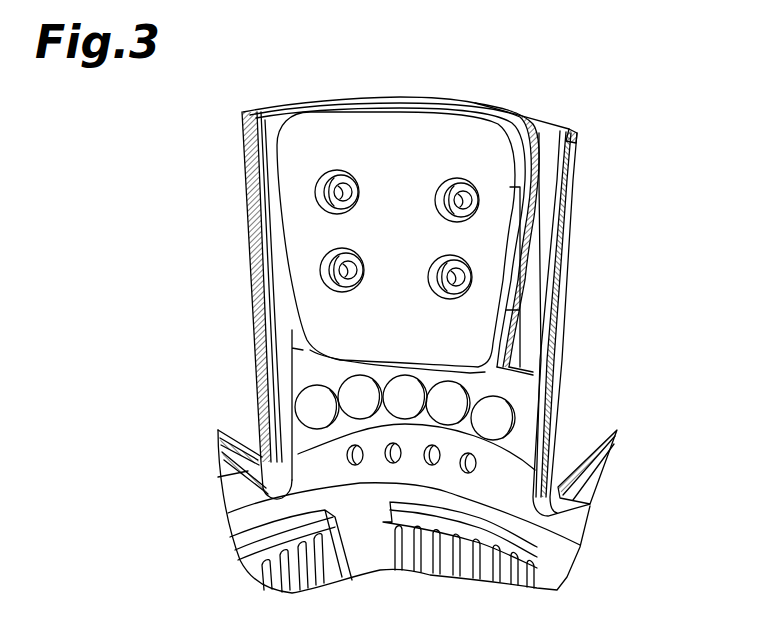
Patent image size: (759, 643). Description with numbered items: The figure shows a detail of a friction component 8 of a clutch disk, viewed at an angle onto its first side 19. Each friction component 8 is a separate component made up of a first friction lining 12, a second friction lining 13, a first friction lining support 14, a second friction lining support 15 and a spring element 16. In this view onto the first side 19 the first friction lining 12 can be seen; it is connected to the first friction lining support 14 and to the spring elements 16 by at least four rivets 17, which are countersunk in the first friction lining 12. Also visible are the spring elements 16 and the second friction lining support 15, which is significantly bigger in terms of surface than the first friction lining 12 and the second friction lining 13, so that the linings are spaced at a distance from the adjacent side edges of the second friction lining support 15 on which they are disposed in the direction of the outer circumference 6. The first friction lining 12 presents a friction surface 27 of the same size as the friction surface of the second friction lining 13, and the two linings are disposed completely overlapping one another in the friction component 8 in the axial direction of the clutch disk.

The outer circumference 6 is at (252, 446).
The friction component 8 is at (520, 88).
The first friction lining 12 is at (405, 158).
The second friction lining 13 is at (247, 233).
The first friction lining support 14 is at (481, 376).
The second friction lining support 15 is at (572, 125).
The spring element 16 is at (517, 383).
The rivet 17 is at (333, 155).
The first side 19 is at (243, 291).
The friction surface 27 is at (377, 130).